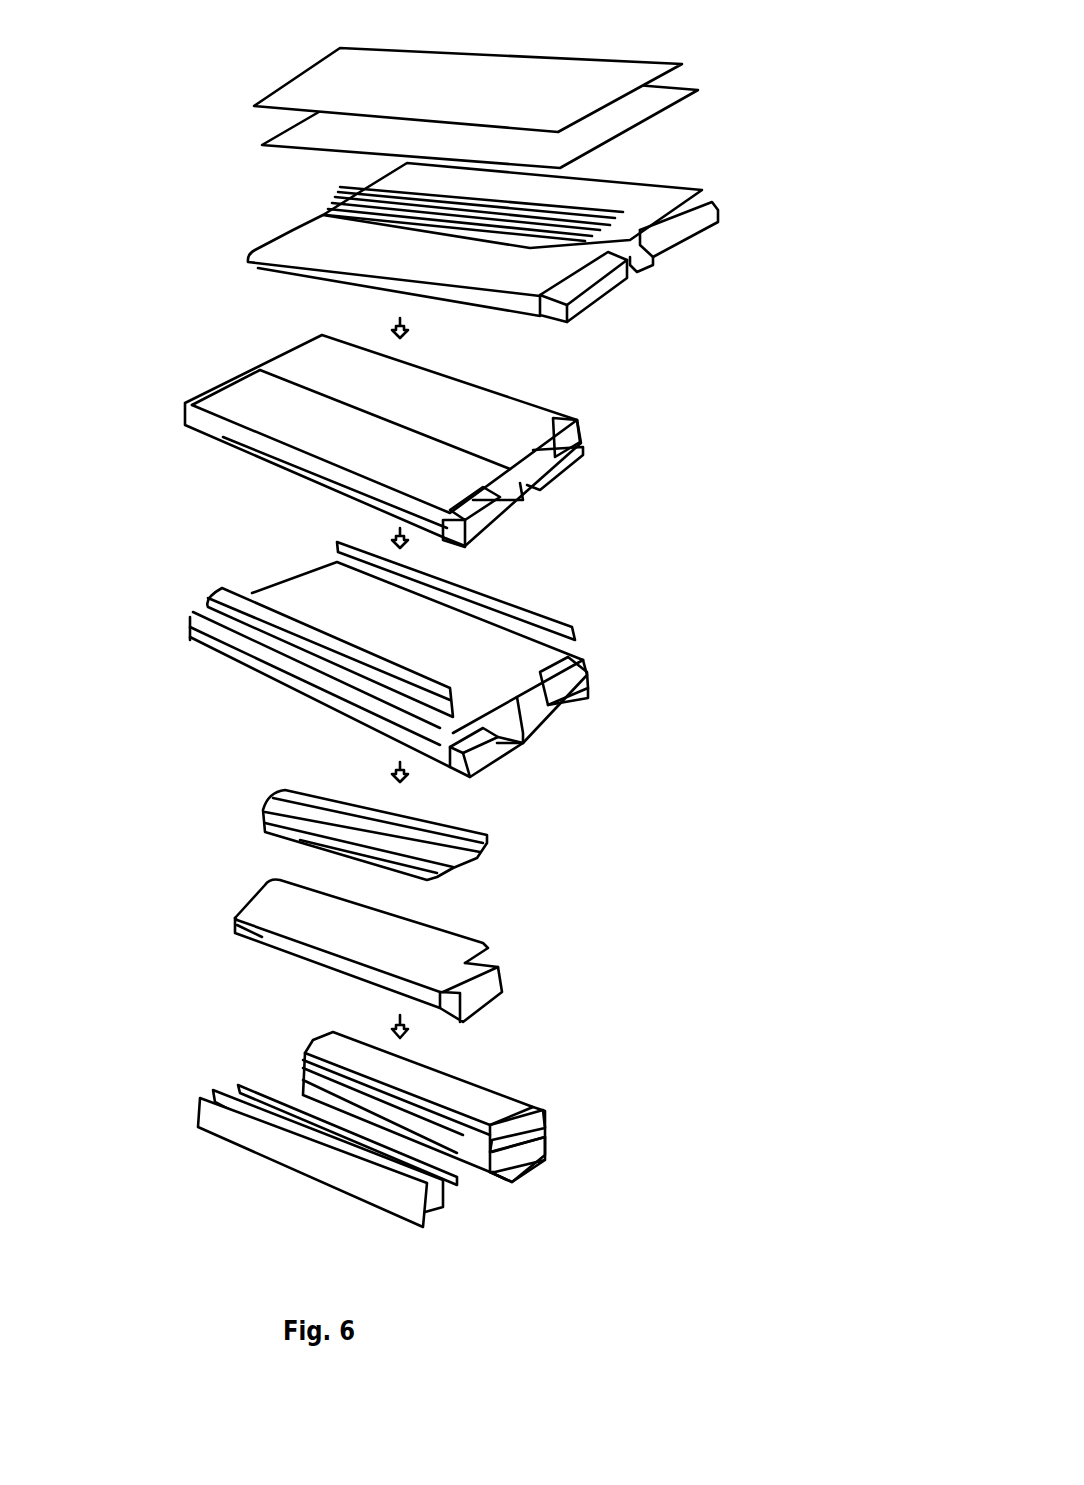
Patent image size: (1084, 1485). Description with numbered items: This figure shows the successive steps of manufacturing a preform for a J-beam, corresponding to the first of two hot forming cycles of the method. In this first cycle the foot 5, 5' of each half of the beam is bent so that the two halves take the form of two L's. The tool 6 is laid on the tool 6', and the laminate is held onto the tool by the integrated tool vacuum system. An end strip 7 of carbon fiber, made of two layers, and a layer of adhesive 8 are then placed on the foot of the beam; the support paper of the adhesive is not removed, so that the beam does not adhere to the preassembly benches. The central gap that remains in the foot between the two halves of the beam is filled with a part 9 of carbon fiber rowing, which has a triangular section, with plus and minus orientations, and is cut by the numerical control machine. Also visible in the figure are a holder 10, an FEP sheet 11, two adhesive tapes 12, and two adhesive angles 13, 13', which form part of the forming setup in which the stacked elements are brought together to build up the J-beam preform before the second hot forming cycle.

The foot 5 is at (485, 638).
The foot 5' is at (349, 662).
The tool 6 is at (664, 677).
The tool 6' is at (576, 737).
The end strip 7 is at (215, 1092).
The layer of adhesive 8 is at (267, 1148).
The part of carbon fiber 9 is at (457, 1178).
The holder 10 is at (565, 88).
The FEP sheet 11 is at (620, 116).
The adhesive tapes 12 is at (340, 187).
The adhesive angle 13 is at (246, 627).
The adhesive angle 13' is at (513, 591).